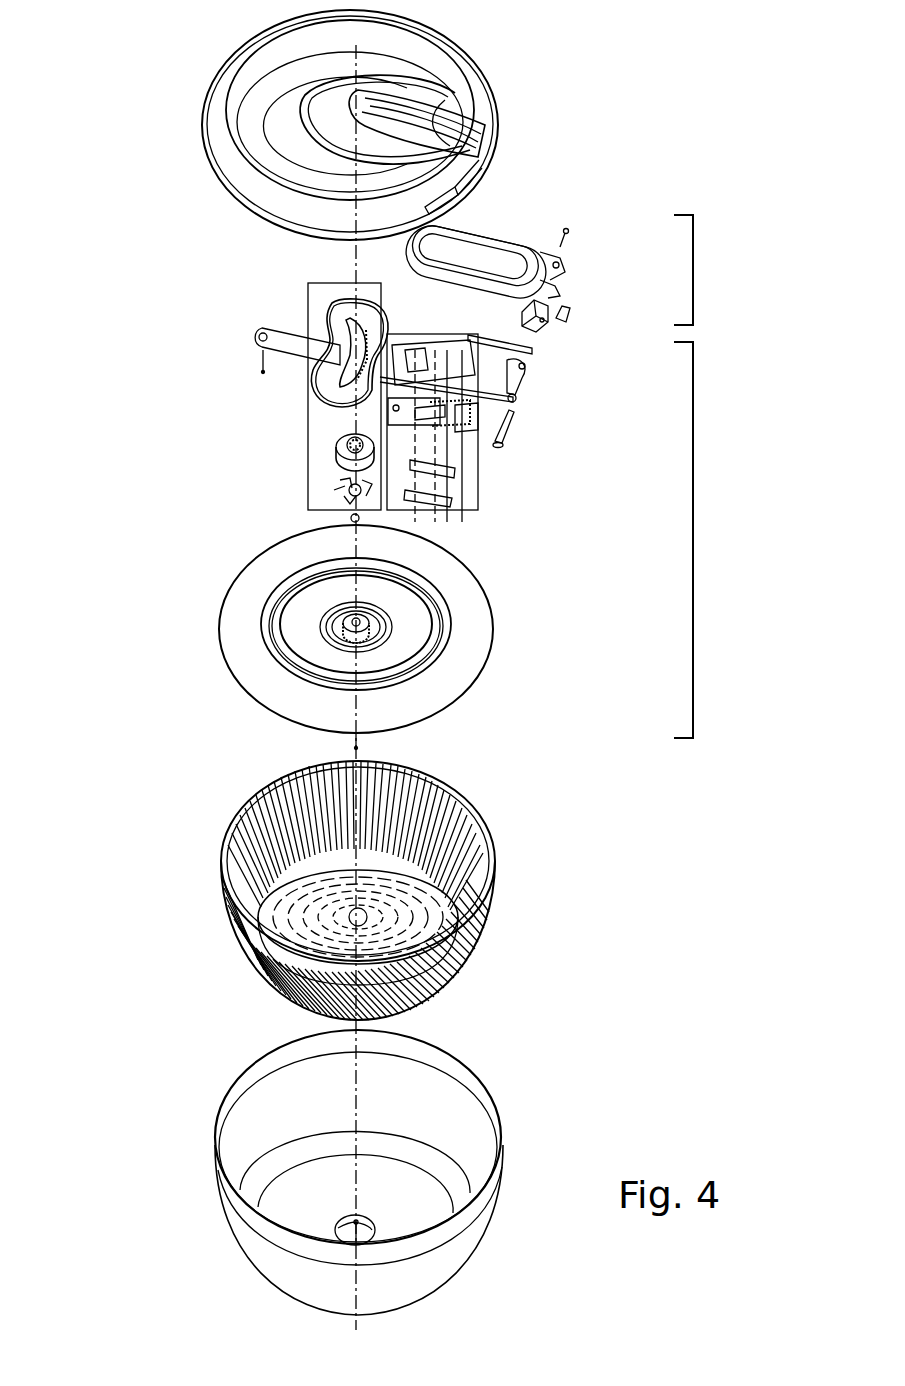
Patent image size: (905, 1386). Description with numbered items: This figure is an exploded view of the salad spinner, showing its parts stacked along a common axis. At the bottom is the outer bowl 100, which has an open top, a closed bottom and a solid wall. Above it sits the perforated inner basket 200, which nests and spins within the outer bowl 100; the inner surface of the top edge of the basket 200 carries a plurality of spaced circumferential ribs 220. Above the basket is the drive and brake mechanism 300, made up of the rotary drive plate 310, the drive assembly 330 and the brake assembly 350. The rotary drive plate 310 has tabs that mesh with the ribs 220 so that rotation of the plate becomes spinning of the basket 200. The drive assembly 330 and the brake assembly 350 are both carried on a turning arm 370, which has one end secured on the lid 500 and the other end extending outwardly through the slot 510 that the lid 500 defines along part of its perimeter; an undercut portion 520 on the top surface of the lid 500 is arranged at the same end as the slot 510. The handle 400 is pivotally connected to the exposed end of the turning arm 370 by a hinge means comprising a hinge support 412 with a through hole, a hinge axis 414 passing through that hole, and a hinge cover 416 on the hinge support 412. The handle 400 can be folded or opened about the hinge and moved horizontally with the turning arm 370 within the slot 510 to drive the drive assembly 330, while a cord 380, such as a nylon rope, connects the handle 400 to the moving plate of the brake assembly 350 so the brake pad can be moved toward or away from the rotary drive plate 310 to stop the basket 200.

The outer bowl 100 is at (432, 1275).
The inner basket 200 is at (409, 882).
The circumferential ribs 220 is at (440, 780).
The drive and brake mechanism 300 is at (720, 540).
The rotary drive plate 310 is at (468, 632).
The drive assembly 330 is at (320, 290).
The brake assembly 350 is at (460, 492).
The turning arm 370 is at (290, 343).
The cord 380 is at (520, 343).
The handle 400 is at (583, 270).
The hinge support 412 is at (540, 310).
The hinge axis 414 is at (512, 435).
The hinge cover 416 is at (568, 318).
The lid 500 is at (237, 115).
The slot 510 is at (455, 195).
The undercut portion 520 is at (390, 120).